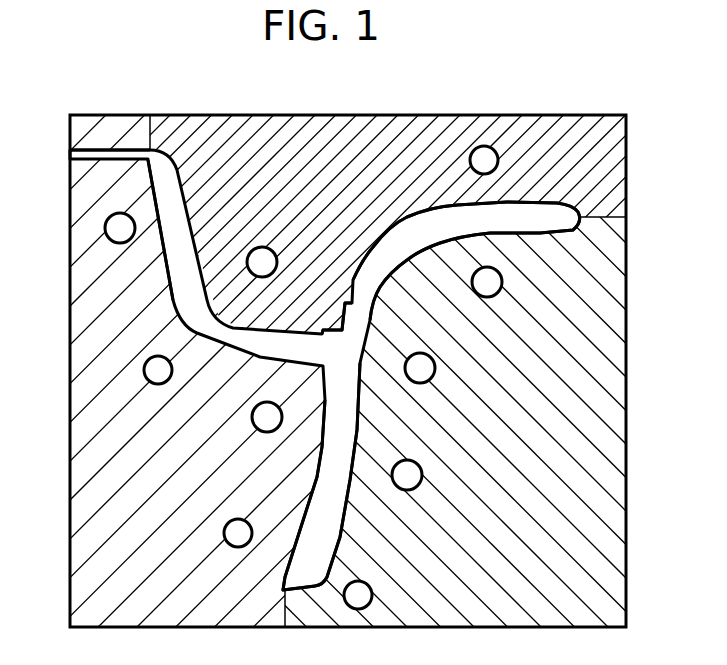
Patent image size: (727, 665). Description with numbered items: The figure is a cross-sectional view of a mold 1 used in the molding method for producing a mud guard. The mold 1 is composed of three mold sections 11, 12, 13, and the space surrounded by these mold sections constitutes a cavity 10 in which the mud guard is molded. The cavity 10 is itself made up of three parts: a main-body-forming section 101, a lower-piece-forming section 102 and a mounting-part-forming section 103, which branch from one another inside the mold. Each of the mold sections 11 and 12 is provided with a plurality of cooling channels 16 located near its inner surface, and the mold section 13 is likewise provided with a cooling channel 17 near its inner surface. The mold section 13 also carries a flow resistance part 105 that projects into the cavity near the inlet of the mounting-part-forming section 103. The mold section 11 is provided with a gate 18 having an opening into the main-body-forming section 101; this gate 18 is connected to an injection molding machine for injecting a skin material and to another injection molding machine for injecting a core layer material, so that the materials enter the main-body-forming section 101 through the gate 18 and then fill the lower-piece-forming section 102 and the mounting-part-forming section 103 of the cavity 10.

The mold 1 is at (631, 470).
The cavity 10 is at (313, 473).
The mold section 11 is at (93, 342).
The mold section 12 is at (590, 543).
The mold section 13 is at (393, 162).
The cooling channels 16 is at (160, 384).
The cooling channel 17 is at (262, 247).
The gate 18 is at (77, 153).
The main-body-forming section 101 is at (170, 265).
The lower-piece-forming section 102 is at (335, 507).
The mounting-part-forming section 103 is at (543, 223).
The flow resistance part 105 is at (353, 313).